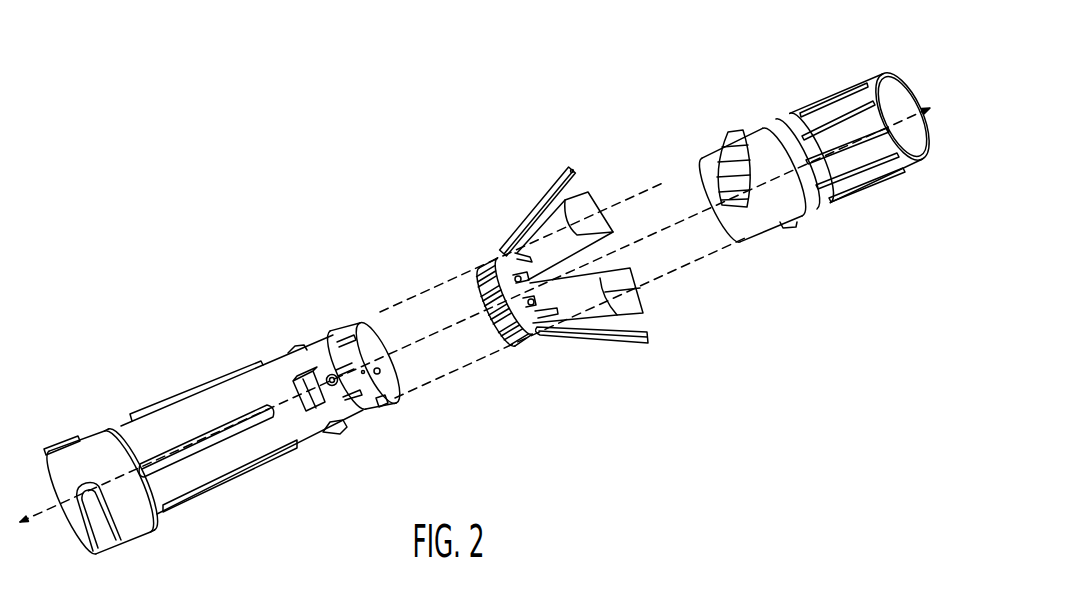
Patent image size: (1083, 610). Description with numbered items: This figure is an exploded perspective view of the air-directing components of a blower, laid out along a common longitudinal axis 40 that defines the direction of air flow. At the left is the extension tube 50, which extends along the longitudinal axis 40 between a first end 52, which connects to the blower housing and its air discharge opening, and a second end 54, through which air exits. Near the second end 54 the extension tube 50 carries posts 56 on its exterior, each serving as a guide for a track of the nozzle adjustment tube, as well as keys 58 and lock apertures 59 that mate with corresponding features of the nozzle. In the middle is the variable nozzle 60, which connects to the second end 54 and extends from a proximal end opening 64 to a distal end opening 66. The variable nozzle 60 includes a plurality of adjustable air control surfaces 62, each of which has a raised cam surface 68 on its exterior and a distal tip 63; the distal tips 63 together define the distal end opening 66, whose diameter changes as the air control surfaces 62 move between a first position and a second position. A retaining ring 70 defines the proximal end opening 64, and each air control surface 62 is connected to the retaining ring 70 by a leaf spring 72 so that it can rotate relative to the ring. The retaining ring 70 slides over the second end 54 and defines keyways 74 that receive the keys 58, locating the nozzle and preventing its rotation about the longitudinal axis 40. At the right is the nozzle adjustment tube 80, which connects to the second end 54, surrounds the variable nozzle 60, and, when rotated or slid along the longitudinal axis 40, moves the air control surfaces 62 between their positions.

The longitudinal axis 40 is at (27, 523).
The extension tube 50 is at (205, 370).
The first end 52 is at (40, 451).
The second end 54 is at (388, 355).
The post 56 is at (322, 361).
The key 58 is at (380, 406).
The lock aperture 59 is at (393, 376).
The variable nozzle 60 is at (525, 259).
The air control surface 62 is at (547, 240).
The distal tip 63 is at (592, 130).
The proximal end opening 64 is at (494, 337).
The distal end opening 66 is at (603, 196).
The raised cam surface 68 is at (512, 198).
The retaining ring 70 is at (450, 232).
The leaf spring 72 is at (551, 368).
The keyway 74 is at (438, 257).
The nozzle adjustment tube 80 is at (770, 101).